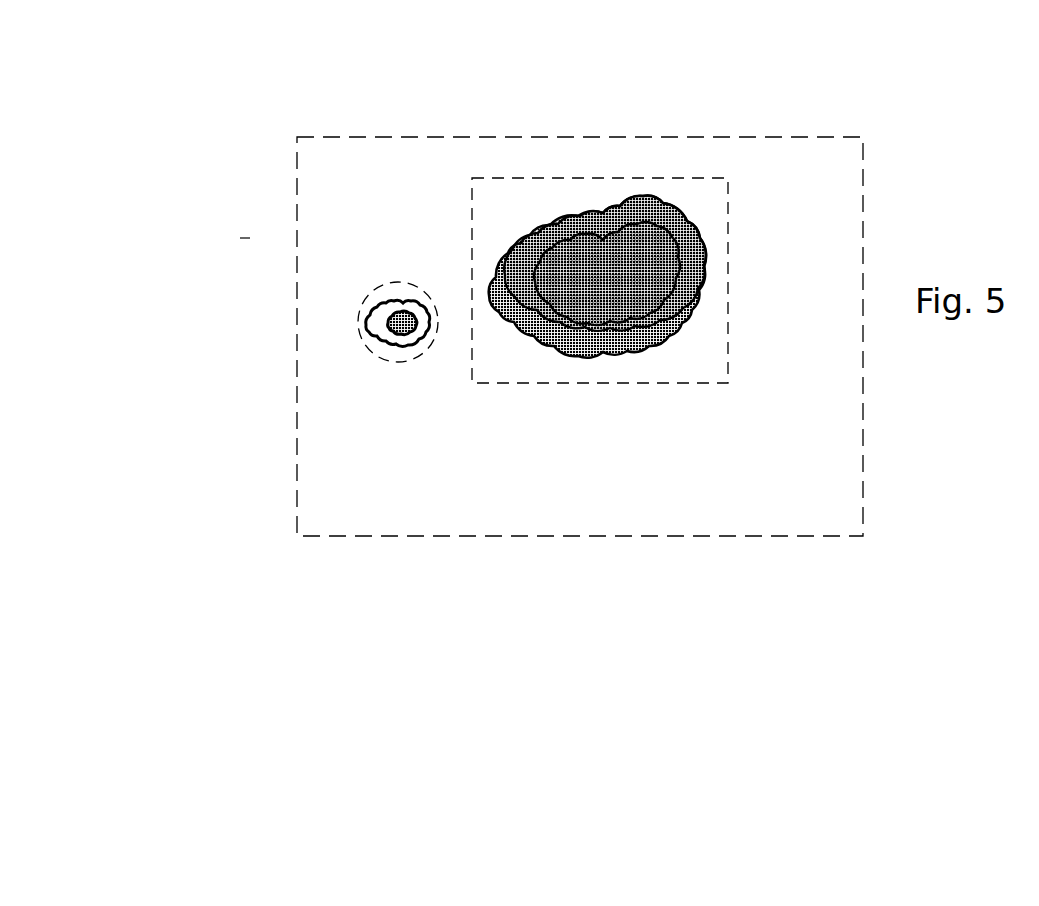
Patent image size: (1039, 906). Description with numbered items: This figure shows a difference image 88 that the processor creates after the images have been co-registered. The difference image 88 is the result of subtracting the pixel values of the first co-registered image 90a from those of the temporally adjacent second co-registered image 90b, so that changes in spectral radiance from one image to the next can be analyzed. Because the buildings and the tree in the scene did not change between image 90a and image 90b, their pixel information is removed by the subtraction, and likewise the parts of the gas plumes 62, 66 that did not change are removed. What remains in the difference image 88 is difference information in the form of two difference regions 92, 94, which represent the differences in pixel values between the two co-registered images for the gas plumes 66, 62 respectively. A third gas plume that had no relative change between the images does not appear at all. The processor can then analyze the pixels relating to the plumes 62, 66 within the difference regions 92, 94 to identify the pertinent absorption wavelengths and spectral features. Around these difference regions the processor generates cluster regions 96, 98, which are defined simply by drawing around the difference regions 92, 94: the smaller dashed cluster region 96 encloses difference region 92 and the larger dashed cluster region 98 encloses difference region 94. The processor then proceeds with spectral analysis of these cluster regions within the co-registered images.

The difference image 88 is at (462, 65).
The co-registered image 90a is at (261, 240).
The co-registered image 90b is at (150, 261).
The gas plume 62 is at (632, 267).
The difference region 94 is at (693, 230).
The gas plume 66 is at (376, 307).
The difference region 92 is at (380, 312).
The cluster region 96 is at (384, 359).
The cluster region 98 is at (728, 307).